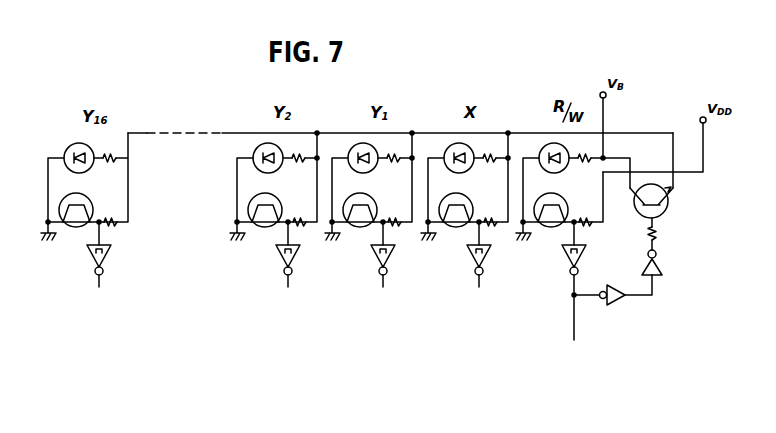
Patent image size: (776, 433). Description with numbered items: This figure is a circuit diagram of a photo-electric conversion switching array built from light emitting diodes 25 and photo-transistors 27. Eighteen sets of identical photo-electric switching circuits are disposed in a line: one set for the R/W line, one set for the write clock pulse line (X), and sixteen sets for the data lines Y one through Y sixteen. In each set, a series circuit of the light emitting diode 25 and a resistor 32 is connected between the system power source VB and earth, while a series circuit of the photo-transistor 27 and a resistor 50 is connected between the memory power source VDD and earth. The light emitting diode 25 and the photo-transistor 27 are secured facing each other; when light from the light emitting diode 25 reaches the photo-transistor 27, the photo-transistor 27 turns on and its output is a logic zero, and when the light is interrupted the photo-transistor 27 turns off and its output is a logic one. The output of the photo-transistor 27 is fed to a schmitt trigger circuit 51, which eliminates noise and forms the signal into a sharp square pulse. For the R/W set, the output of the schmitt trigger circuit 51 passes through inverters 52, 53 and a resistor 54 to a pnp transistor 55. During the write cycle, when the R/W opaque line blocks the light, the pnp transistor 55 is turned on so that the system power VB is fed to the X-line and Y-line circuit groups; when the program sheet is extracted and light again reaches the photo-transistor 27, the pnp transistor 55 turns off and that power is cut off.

The light emitting diode 25 is at (303, 154).
The resistor 32 is at (347, 148).
The photo-transistor 27 is at (324, 207).
The resistor 50 is at (345, 247).
The schmitt trigger circuit 51 is at (349, 262).
The inverter 52 is at (616, 305).
The inverter 53 is at (661, 274).
The resistor 54 is at (664, 231).
The pnp transistor 55 is at (663, 196).